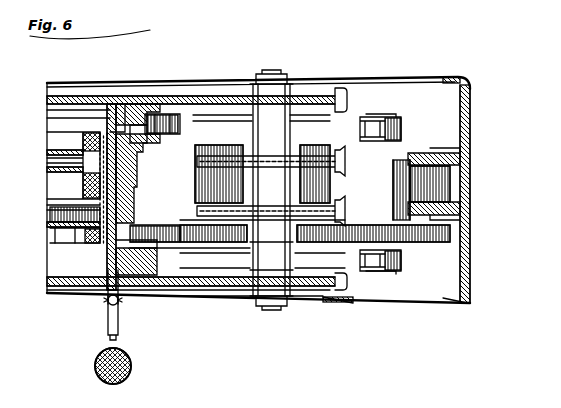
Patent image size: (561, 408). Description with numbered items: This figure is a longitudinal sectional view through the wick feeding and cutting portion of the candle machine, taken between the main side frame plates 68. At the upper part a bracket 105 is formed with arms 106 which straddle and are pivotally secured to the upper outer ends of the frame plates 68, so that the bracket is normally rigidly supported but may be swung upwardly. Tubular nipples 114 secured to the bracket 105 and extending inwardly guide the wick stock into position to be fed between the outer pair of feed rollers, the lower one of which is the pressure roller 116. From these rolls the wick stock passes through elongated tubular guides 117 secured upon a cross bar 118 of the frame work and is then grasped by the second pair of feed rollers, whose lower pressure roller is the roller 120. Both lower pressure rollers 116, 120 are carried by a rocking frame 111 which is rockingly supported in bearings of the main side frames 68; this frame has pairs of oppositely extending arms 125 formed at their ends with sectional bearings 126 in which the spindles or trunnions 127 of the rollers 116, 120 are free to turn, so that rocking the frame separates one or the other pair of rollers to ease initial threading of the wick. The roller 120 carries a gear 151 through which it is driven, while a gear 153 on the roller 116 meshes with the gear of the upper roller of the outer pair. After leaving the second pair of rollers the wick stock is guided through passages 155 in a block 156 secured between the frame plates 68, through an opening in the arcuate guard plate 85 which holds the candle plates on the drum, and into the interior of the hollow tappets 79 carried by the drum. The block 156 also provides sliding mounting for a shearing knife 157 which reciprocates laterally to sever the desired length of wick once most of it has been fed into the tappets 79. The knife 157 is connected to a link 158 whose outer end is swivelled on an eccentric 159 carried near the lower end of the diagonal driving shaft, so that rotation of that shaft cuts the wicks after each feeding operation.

The frame plates 68 is at (240, 80).
The tappets 79 is at (55, 207).
The arcuate guard plate 85 is at (80, 230).
The bracket 105 is at (471, 119).
The arms 106 is at (380, 80).
The rocking frame 111 is at (300, 196).
The tubular nipples 114 is at (462, 160).
The lower pressure roller 116 is at (406, 188).
The elongated tubular guides 117 is at (280, 148).
The cross bar 118 is at (271, 256).
The lower pressure rollers 120 is at (130, 204).
The arms 125 is at (340, 95).
The bearings 126 is at (175, 110).
The spindles or trunnions 127 is at (374, 117).
The gear 151 is at (203, 240).
The gear 153 is at (360, 290).
The passages 155 is at (160, 133).
The block 156 is at (132, 187).
The shearing knife 157 is at (115, 105).
The link 158 is at (117, 325).
The eccentric 159 is at (106, 372).